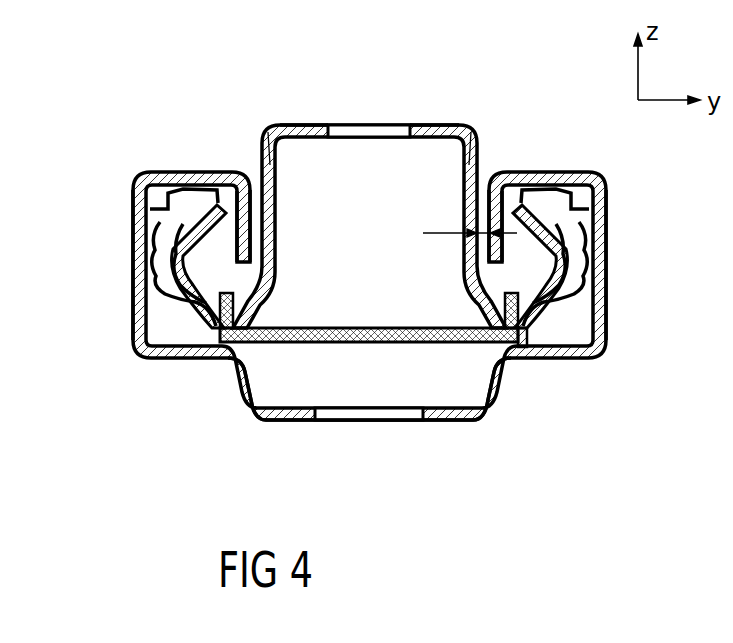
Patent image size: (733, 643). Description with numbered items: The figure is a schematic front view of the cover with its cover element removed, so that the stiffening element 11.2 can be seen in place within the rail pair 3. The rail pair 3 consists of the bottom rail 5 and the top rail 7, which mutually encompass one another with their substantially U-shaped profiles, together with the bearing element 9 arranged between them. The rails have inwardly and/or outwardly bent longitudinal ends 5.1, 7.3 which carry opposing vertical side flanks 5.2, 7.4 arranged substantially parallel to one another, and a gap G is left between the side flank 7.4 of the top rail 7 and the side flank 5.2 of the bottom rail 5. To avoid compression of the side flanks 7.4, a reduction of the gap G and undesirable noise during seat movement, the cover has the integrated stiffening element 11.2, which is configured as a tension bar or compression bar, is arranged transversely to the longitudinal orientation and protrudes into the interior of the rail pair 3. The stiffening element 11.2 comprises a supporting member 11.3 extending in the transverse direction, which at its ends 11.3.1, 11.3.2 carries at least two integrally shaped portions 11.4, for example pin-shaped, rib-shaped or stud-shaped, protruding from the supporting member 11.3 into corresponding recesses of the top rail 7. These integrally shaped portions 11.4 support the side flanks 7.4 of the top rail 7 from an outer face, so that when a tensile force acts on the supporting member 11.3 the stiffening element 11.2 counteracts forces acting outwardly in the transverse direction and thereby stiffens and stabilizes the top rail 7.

The rail pair 3 is at (128, 97).
The bottom rail 5 is at (410, 418).
The longitudinal end of the bottom rail 5.1 is at (137, 316).
The side flank of the bottom rail 5.2 is at (240, 210).
The top rail 7 is at (422, 130).
The longitudinal end of the top rail 7.3 is at (565, 252).
The side flank of the top rail 7.4 is at (293, 123).
The bearing element 9 is at (148, 237).
The stiffening element 11.2 is at (448, 355).
The supporting member 11.3 is at (384, 343).
The end of the supporting member 11.3.1 is at (233, 360).
The end of the supporting member 11.3.2 is at (510, 358).
The integrally shaped portion 11.4 is at (220, 340).
The gap G is at (470, 219).